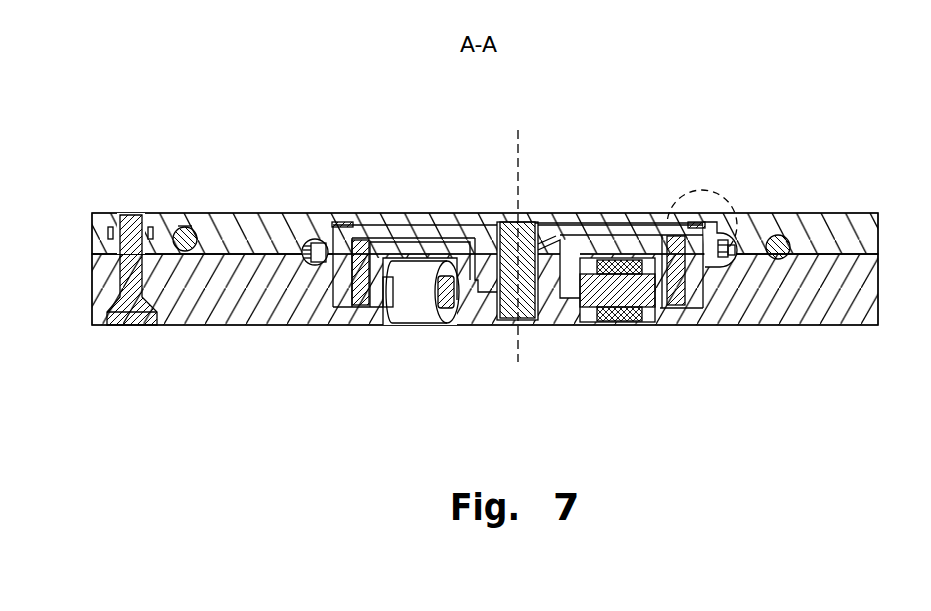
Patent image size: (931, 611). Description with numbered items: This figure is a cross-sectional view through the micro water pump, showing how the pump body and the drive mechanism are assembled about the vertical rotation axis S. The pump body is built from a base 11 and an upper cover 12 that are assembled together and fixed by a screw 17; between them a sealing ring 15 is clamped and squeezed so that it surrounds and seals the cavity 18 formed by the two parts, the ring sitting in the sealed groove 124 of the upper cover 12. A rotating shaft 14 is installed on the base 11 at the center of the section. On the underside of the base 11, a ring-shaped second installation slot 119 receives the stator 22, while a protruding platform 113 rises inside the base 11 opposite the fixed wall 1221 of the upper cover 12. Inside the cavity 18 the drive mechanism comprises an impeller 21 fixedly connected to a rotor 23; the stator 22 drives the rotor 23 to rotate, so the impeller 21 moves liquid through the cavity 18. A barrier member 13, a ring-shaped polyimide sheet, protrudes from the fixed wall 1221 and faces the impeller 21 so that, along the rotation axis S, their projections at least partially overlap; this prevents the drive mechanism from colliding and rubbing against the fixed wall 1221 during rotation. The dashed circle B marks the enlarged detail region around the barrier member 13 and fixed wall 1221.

The base 11 is at (103, 300).
The upper cover 12 is at (98, 220).
The barrier member 13 is at (702, 228).
The rotating shaft 14 is at (493, 283).
The sealing ring 15 is at (180, 233).
The screw 17 is at (130, 305).
The cavity 18 is at (320, 240).
The impeller 21 is at (622, 224).
The stator 22 is at (422, 298).
The rotor 23 is at (355, 282).
The protruding platform 113 is at (570, 240).
The second installation slot 119 is at (645, 308).
The sealed groove 124 is at (186, 240).
The fixed wall 1221 is at (345, 226).
The detail region B is at (713, 190).
The rotation axis S is at (518, 352).